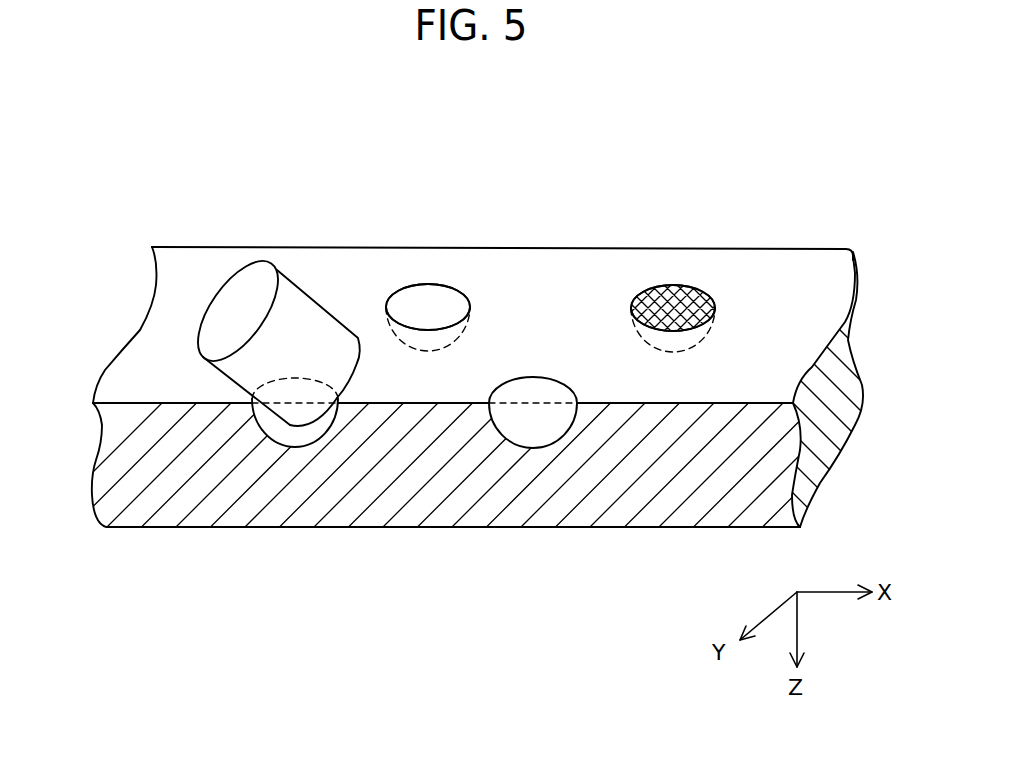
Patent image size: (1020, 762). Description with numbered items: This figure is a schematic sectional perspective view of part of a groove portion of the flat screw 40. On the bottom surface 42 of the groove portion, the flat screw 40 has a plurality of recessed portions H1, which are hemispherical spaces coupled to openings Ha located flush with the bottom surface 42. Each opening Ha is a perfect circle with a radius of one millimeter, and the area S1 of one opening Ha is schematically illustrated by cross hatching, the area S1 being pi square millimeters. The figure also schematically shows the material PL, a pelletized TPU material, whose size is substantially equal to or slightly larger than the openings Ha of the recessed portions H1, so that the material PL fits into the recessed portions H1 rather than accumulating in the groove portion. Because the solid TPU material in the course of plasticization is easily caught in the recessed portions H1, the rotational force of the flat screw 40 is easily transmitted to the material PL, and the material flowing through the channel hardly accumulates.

The flat screw 40 is at (84, 81).
The bottom surface 42 is at (798, 288).
The material PL is at (245, 297).
The opening Ha is at (395, 291).
The recessed portion H1 is at (588, 277).
The area of the opening S1 is at (665, 298).